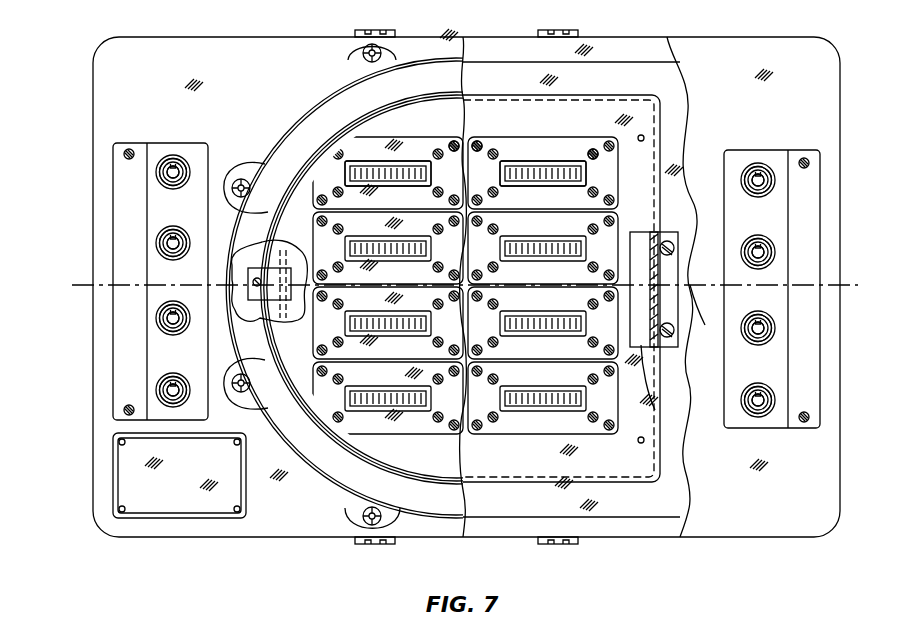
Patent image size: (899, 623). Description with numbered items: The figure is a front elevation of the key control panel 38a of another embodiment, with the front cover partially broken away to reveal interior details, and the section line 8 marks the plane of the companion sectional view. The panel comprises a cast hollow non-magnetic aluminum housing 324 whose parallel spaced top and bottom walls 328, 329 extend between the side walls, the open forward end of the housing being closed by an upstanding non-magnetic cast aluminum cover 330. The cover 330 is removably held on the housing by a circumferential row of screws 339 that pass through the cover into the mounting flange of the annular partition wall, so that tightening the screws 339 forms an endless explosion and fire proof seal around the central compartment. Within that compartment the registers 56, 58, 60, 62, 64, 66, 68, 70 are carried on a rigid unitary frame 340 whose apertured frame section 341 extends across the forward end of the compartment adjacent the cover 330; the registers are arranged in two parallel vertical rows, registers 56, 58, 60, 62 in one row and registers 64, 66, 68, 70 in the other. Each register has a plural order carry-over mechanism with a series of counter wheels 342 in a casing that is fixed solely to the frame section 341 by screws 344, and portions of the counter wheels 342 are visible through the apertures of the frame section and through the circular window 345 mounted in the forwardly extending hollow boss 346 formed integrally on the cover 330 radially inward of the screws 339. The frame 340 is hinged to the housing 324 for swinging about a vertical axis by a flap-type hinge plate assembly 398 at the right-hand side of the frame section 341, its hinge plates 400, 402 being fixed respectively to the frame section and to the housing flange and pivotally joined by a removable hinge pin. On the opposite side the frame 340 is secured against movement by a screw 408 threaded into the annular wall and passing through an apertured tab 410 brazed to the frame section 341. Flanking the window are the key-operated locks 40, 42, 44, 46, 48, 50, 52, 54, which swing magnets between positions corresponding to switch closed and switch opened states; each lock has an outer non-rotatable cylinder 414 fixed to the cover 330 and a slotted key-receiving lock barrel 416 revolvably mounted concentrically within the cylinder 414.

The section line 8 is at (72, 285).
The key control panel 38a is at (167, 37).
The lock 40 is at (160, 157).
The lock 42 is at (156, 232).
The lock 44 is at (153, 319).
The lock 46 is at (153, 388).
The lock 48 is at (769, 163).
The lock 50 is at (773, 238).
The lock 52 is at (780, 318).
The lock 54 is at (776, 389).
The register 56 is at (385, 162).
The register 58 is at (378, 228).
The register 60 is at (375, 298).
The register 62 is at (370, 373).
The register 64 is at (513, 143).
The register 66 is at (533, 225).
The register 68 is at (530, 303).
The register 70 is at (518, 377).
The housing 324 is at (645, 42).
The top wall 328 is at (600, 52).
The bottom wall 329 is at (608, 525).
The cover 330 is at (243, 53).
The screws 339 is at (363, 55).
The frame 340 is at (588, 102).
The frame section 341 is at (642, 118).
The counter wheels 342 is at (397, 164).
The screws 344 is at (479, 143).
The window 345 is at (440, 445).
The boss 346 is at (322, 116).
The hinge plate assembly 398 is at (684, 313).
The hinge plate 400 is at (656, 410).
The hinge plate 402 is at (665, 232).
The screw 408 is at (258, 290).
The tab 410 is at (268, 273).
The cylinder 414 is at (182, 164).
The lock barrel 416 is at (186, 171).